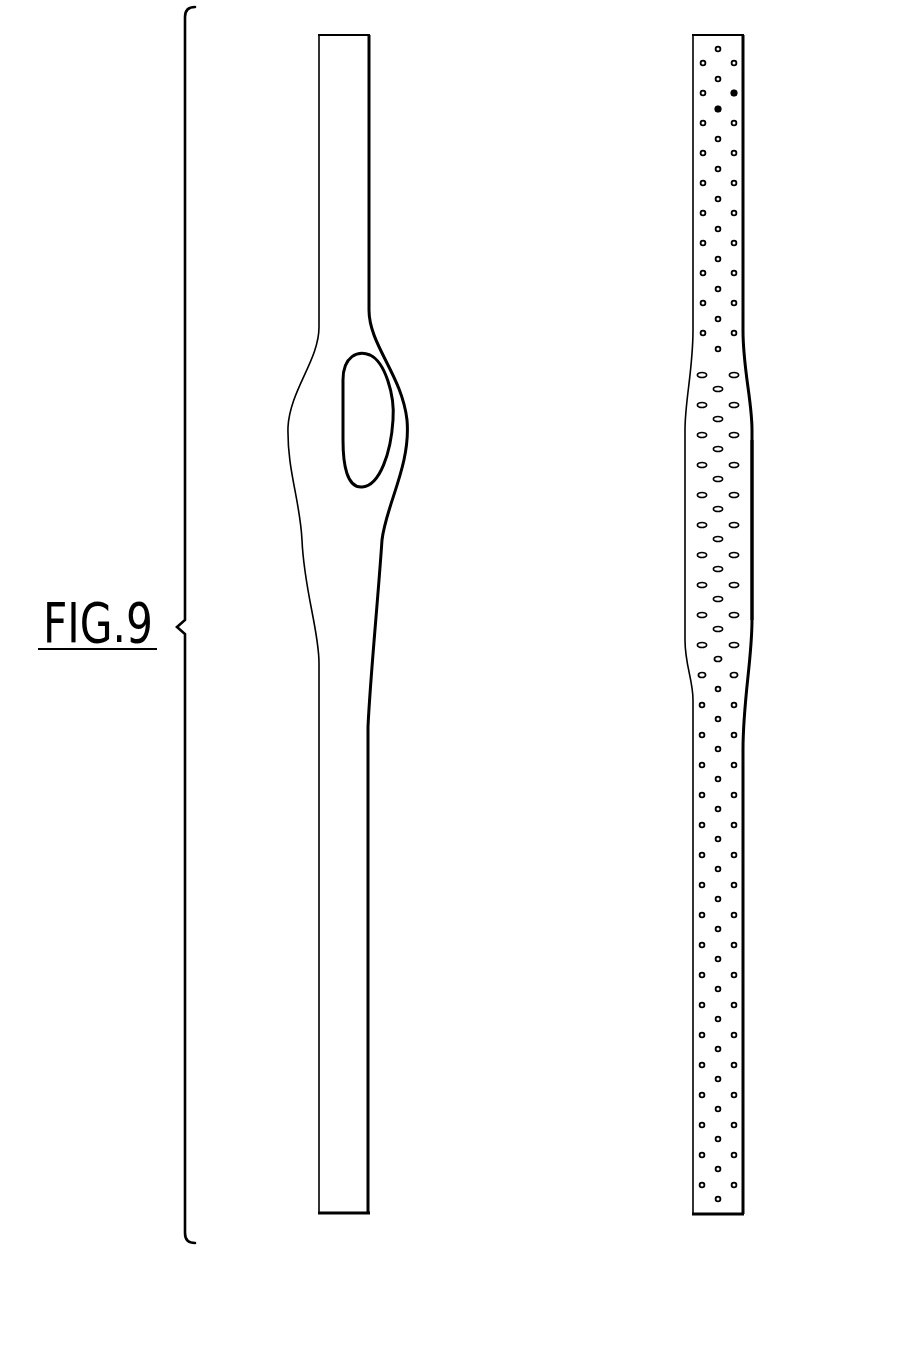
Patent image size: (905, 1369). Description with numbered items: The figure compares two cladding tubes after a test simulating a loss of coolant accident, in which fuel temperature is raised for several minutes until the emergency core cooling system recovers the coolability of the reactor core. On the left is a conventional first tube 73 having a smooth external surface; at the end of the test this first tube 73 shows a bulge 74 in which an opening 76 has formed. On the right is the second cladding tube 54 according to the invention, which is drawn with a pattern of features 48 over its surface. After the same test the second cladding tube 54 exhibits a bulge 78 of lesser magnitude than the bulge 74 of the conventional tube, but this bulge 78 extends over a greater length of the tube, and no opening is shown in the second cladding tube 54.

The first tube 73 is at (400, 246).
The bulge 74 is at (400, 378).
The opening 76 is at (377, 443).
The second cladding tube 54 is at (705, 624).
The perforations 48 is at (688, 117).
The bulge 78 is at (753, 478).